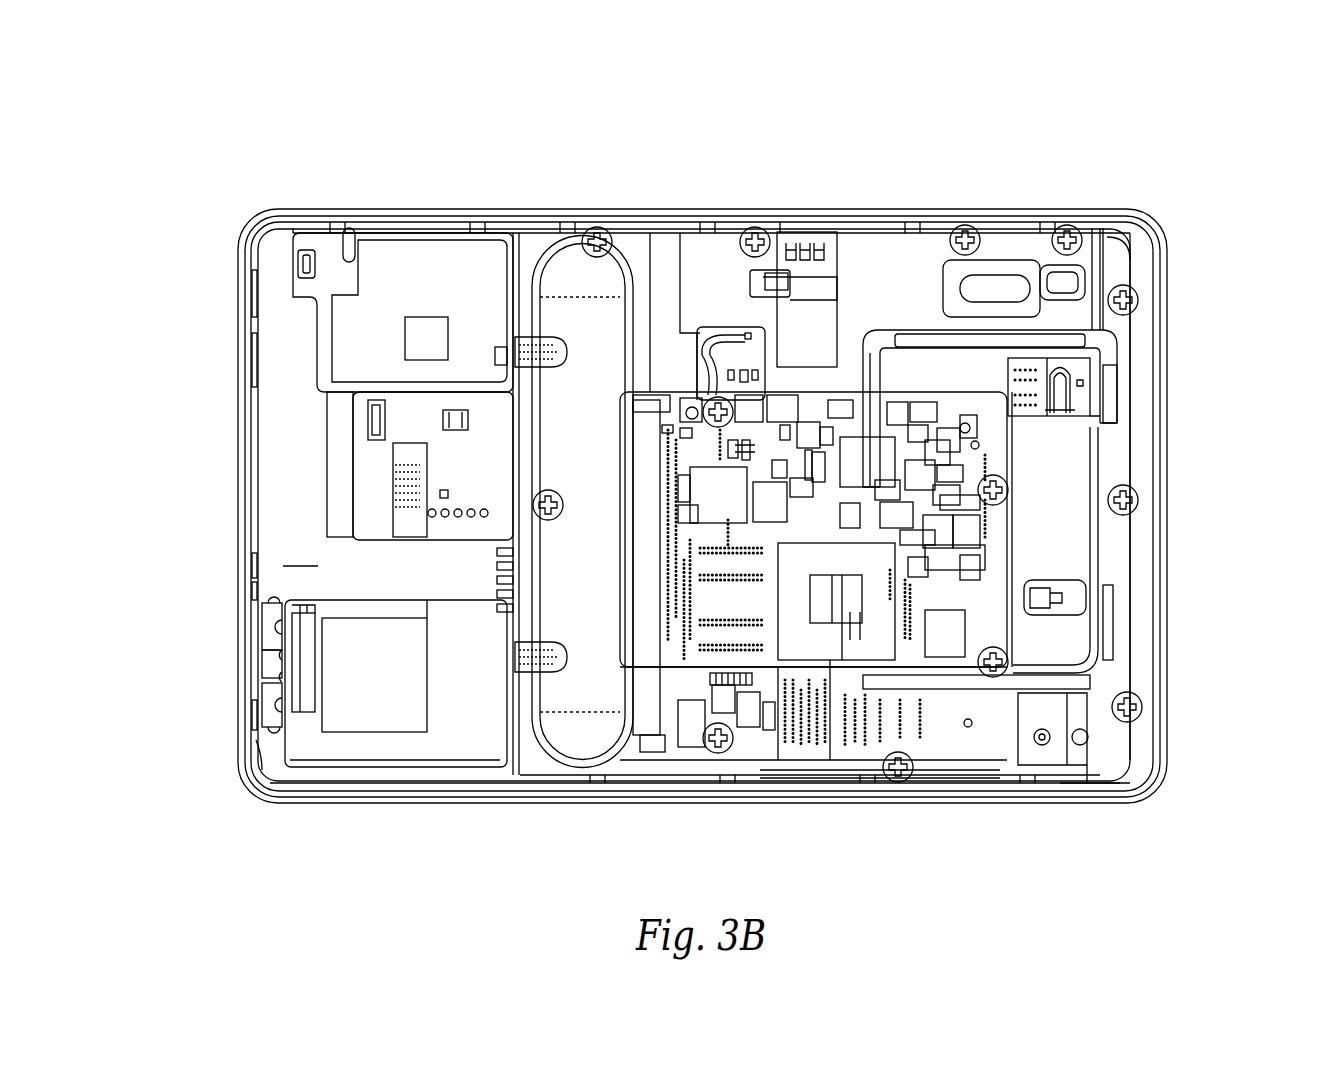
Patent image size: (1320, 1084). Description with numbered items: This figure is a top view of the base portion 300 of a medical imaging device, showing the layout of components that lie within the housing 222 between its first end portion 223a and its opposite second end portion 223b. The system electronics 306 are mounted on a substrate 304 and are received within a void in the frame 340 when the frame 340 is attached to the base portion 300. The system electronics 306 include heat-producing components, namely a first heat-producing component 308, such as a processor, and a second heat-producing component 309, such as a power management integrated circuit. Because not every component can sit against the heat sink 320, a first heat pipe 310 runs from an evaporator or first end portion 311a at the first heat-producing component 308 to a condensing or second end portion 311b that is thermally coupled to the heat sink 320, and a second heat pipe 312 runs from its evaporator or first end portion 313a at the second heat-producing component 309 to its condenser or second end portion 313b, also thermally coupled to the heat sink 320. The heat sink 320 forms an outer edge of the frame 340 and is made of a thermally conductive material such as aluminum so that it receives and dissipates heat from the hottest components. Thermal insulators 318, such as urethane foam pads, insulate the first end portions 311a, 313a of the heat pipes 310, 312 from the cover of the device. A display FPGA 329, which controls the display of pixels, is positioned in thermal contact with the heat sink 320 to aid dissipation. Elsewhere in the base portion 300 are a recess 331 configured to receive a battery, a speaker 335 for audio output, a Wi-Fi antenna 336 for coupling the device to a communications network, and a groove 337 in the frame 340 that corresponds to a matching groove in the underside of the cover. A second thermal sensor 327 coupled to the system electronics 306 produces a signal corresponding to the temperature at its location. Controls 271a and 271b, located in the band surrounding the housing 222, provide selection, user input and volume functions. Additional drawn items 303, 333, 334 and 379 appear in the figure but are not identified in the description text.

The base portion 300 is at (1237, 122).
The housing 222 is at (365, 213).
The first end portion 223a is at (198, 240).
The second end portion 223b is at (1205, 232).
The groove 337 is at (553, 333).
The second thermal sensor 327 is at (583, 232).
The fastener 303 is at (597, 228).
The frame 340 is at (668, 252).
The Wi-Fi antenna 336 is at (768, 280).
The thermal insulators 318 is at (838, 392).
The first end portion of second heat pipe 313a is at (878, 338).
The speaker 335 is at (1005, 283).
The second heat pipe 312 is at (1110, 352).
The second end portion of second heat pipe 313b is at (1118, 362).
The heat sink 320 is at (1137, 406).
The second heat-producing component 309 is at (940, 457).
The system electronics 306 is at (988, 464).
The first heat-producing component 308 is at (886, 572).
The display FPGA 329 is at (1074, 592).
The first heat pipe 310 is at (1117, 623).
The second end portion of first heat pipe 311b is at (1108, 670).
The secondary circuit board 334 is at (333, 430).
The recess 331 is at (301, 555).
The control 271b is at (262, 613).
The latch 333 is at (262, 643).
The control 271a is at (262, 692).
The substrate 304 is at (790, 775).
The first end portion of first heat pipe 311a is at (832, 660).
The corner support 379 is at (1085, 805).